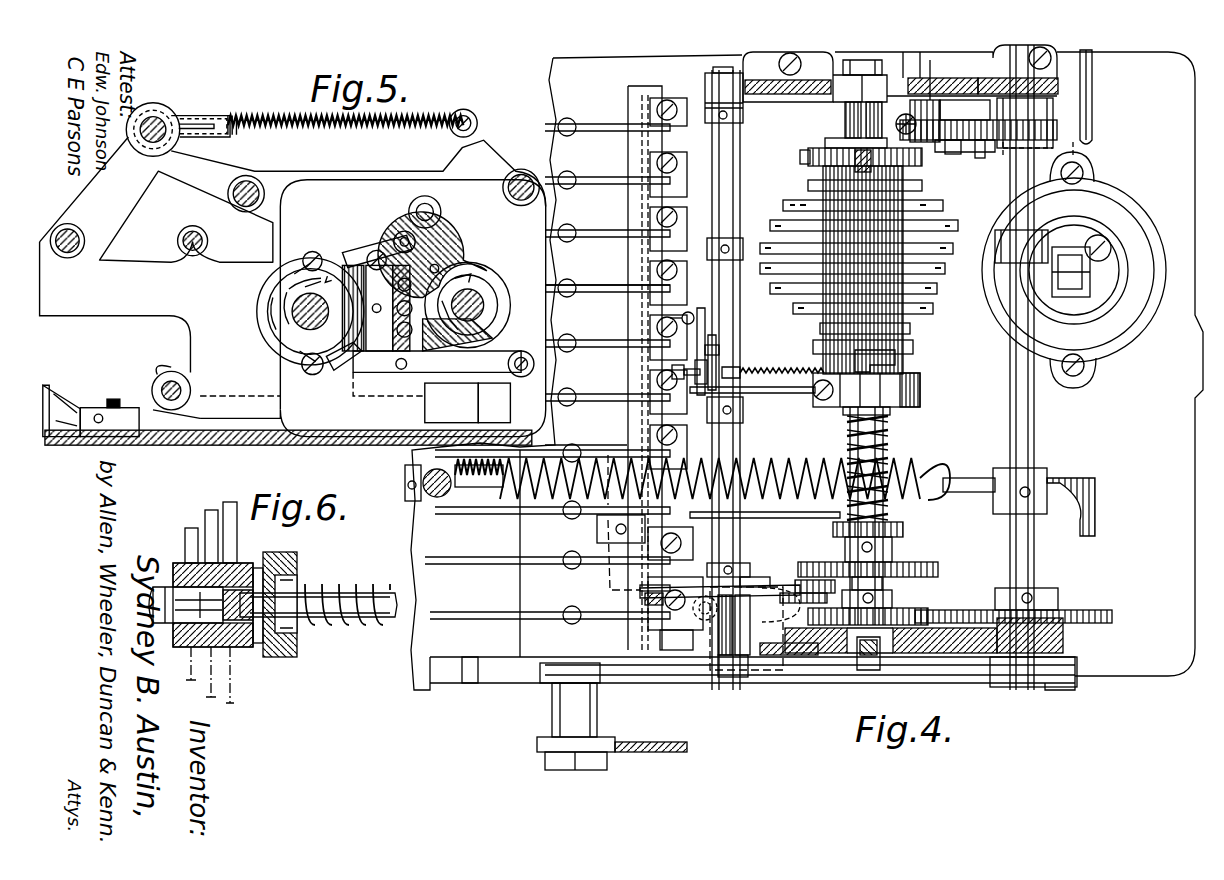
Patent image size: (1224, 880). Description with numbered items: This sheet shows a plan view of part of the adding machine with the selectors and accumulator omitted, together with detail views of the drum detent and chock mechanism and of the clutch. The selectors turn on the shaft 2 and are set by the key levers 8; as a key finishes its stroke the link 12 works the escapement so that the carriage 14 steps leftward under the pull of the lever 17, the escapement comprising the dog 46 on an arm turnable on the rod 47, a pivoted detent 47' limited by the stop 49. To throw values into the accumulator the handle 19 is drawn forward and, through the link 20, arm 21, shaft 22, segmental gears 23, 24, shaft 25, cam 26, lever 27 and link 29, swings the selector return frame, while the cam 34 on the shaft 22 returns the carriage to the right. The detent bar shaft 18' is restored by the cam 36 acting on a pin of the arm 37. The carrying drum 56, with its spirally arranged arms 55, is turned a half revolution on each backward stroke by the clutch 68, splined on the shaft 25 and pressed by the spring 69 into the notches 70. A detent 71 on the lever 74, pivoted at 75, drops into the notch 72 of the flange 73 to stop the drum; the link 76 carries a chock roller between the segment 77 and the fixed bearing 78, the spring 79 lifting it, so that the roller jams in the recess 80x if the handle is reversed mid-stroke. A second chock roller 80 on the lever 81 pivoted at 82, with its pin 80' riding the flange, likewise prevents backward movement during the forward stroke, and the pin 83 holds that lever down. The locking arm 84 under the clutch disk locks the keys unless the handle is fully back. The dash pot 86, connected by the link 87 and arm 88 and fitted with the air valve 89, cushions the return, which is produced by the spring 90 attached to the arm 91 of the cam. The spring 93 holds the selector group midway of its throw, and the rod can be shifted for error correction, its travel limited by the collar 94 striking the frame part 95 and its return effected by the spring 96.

In FIG. 5, the shaft 2 is at (150, 115).
In FIG. 4, the key levers 8 is at (600, 185).
In FIG. 5, the key levers 8 is at (52, 364).
In FIG. 4, the link 12 is at (600, 318).
In FIG. 4, the carriage 14 is at (722, 437).
In FIG. 4, the lever 17 is at (760, 606).
In FIG. 4, the shaft 18' is at (587, 430).
In FIG. 5, the shaft 18' is at (82, 271).
In FIG. 4, the handle 19 is at (660, 742).
In FIG. 4, the link 20 is at (745, 673).
In FIG. 4, the arm 21 is at (1068, 682).
In FIG. 4, the shaft 22 is at (1040, 575).
In FIG. 5, the shaft 22 is at (460, 290).
In FIG. 4, the segmental gear 23 is at (975, 615).
In FIG. 4, the segmental gear 24 is at (918, 616).
In FIG. 4, the shaft 25 is at (888, 438).
In FIG. 6, the shaft 25 is at (392, 588).
In FIG. 4, the cam 26 is at (930, 566).
In FIG. 4, the lever 27 is at (760, 590).
In FIG. 4, the link 29 is at (645, 596).
In FIG. 4, the cam 34 is at (1097, 495).
In FIG. 4, the cam 36 is at (905, 530).
In FIG. 4, the arm 37 is at (800, 515).
In FIG. 4, the escapement dog 46 is at (670, 373).
In FIG. 4, the rod 47 is at (722, 343).
In FIG. 5, the rod 47 is at (165, 375).
In FIG. 4, the pivoted detent 47' is at (745, 351).
In FIG. 4, the stop 49 is at (718, 354).
In FIG. 4, the arms 55 is at (786, 205).
In FIG. 5, the arms 55 is at (278, 240).
In FIG. 6, the arms 55 is at (212, 510).
In FIG. 4, the drum 56 is at (930, 318).
In FIG. 6, the drum 56 is at (178, 645).
In FIG. 4, the clutch 68 is at (920, 374).
In FIG. 6, the clutch 68 is at (297, 565).
In FIG. 4, the spring 69 is at (900, 420).
In FIG. 4, the notches 70 is at (908, 352).
In FIG. 6, the notches 70 is at (257, 565).
In FIG. 4, the detent 71 is at (850, 148).
In FIG. 5, the detent 71 is at (291, 240).
In FIG. 4, the notch 72 is at (833, 152).
In FIG. 5, the notch 72 is at (262, 270).
In FIG. 4, the flange 73 is at (812, 160).
In FIG. 5, the flange 73 is at (246, 300).
In FIG. 5, the lever 74 is at (313, 240).
In FIG. 4, the pivot 75 is at (960, 142).
In FIG. 5, the pivot 75 is at (352, 238).
In FIG. 4, the link 76 is at (955, 130).
In FIG. 5, the link 76 is at (382, 255).
In FIG. 4, the segment 77 is at (1060, 128).
In FIG. 5, the segment 77 is at (447, 260).
In FIG. 4, the fixed bearing 78 is at (927, 122).
In FIG. 5, the fixed bearing 78 is at (378, 308).
In FIG. 4, the spring 79 is at (905, 115).
In FIG. 5, the spring 79 is at (345, 345).
In FIG. 5, the chock detent roller 80 is at (437, 362).
In FIG. 5, the chock recess 80x is at (462, 347).
In FIG. 5, the pin or roller 80' is at (310, 383).
In FIG. 4, the lever 81 is at (1080, 150).
In FIG. 5, the lever 81 is at (452, 400).
In FIG. 5, the pivot 82 is at (476, 355).
In FIG. 4, the pin 83 is at (978, 158).
In FIG. 5, the pin 83 is at (410, 253).
In FIG. 4, the locking arm 84 is at (785, 393).
In FIG. 4, the dash pot 86 is at (1120, 322).
In FIG. 4, the link 87 is at (1085, 268).
In FIG. 4, the arm 88 is at (1041, 239).
In FIG. 4, the air valve 89 is at (1110, 250).
In FIG. 4, the spring 90 is at (800, 470).
In FIG. 4, the arm 91 is at (980, 480).
In FIG. 5, the spring 93 is at (345, 128).
In FIG. 4, the collar 94 is at (742, 575).
In FIG. 4, the frame part 95 is at (715, 645).
In FIG. 4, the spring 96 is at (707, 668).